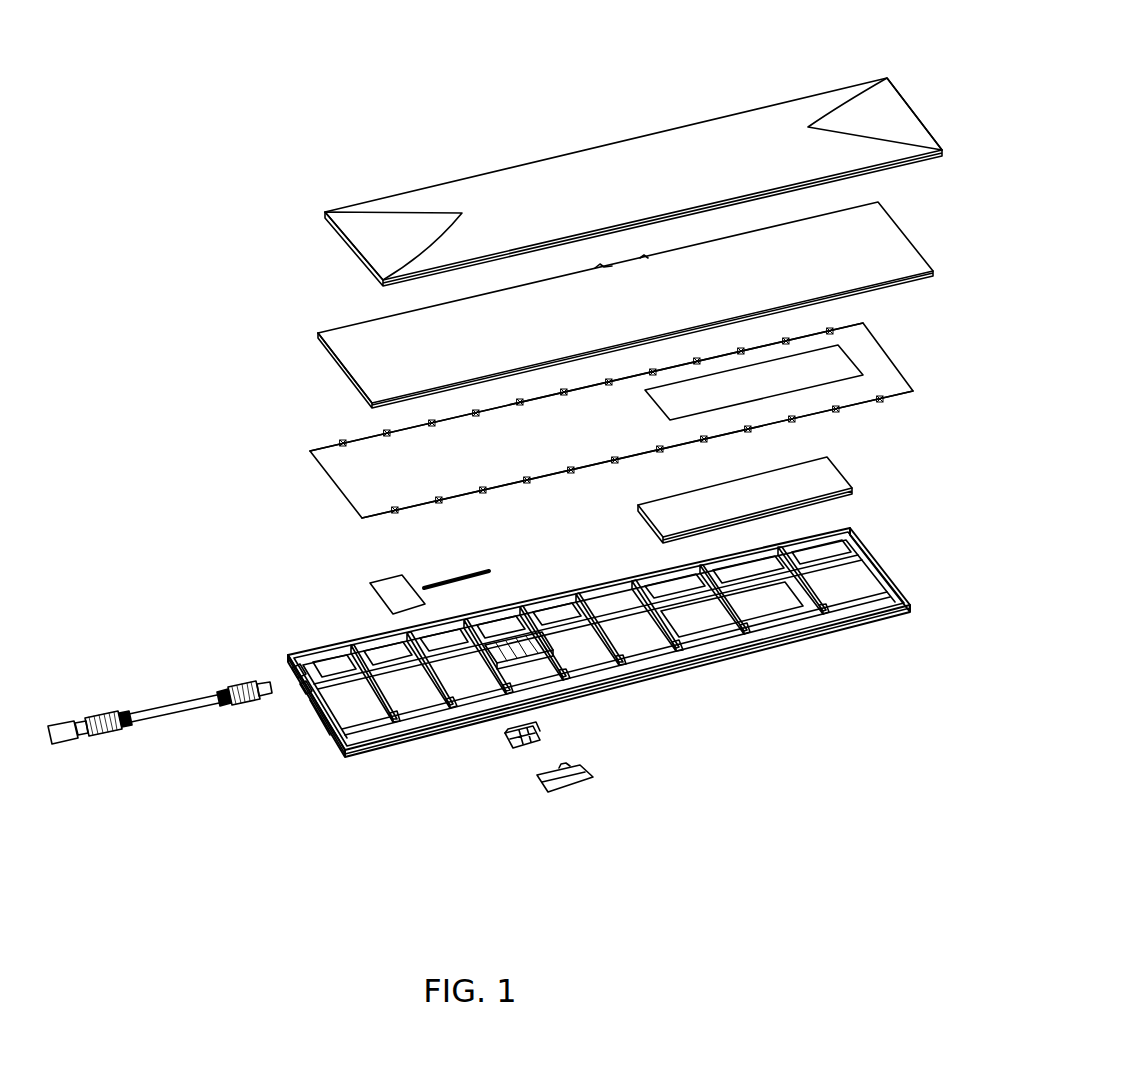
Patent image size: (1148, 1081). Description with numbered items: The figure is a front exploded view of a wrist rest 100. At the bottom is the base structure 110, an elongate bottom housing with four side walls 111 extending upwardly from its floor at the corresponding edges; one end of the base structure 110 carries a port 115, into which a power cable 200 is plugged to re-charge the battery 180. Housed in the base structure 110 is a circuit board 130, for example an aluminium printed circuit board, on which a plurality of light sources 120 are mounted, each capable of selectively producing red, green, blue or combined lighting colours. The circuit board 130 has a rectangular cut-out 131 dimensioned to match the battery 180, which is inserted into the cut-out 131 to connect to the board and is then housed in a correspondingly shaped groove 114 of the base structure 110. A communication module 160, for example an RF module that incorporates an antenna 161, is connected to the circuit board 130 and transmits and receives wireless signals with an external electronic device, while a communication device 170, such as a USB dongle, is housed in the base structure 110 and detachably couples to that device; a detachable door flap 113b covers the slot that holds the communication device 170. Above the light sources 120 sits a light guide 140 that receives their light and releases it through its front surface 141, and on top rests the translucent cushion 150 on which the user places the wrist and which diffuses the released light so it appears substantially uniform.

The wrist rest 100 is at (232, 140).
The base structure 110 is at (588, 621).
The side wall 111 is at (317, 723).
The detachable door flap 113b is at (540, 792).
The groove 114 is at (599, 639).
The port 115 is at (283, 672).
The light source 120 is at (395, 498).
The circuit board 130 is at (627, 400).
The cut-out 131 is at (754, 382).
The light guide 140 is at (622, 290).
The front surface 141 is at (343, 347).
The cushion 150 is at (853, 82).
The communication module 160 is at (413, 577).
The antenna 161 is at (487, 573).
The communication device 170 is at (505, 748).
The battery 180 is at (845, 480).
The power cable 200 is at (150, 700).